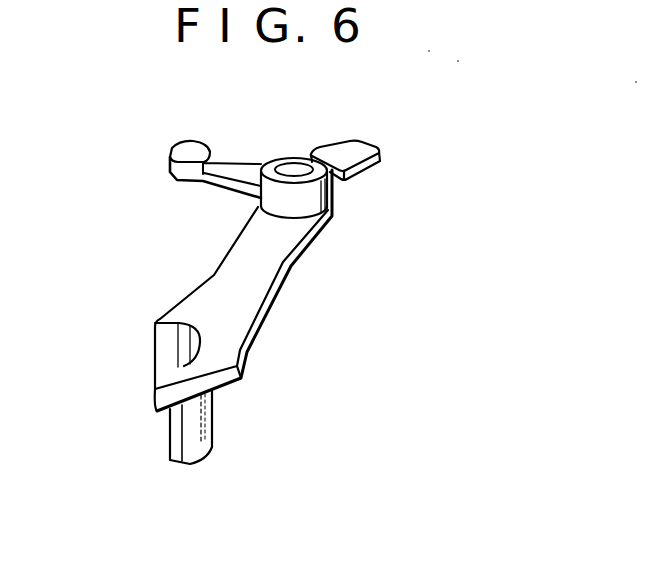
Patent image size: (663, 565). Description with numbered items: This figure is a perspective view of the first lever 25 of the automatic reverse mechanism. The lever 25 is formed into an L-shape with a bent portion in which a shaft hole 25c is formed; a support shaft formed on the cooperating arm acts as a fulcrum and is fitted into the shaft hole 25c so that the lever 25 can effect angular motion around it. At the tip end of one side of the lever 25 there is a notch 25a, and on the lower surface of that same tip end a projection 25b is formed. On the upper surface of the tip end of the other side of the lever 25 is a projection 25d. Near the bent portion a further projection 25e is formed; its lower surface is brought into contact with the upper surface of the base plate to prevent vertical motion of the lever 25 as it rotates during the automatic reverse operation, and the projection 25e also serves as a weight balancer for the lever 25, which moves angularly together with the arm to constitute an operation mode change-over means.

The first lever 25 is at (218, 274).
The notch 25a is at (197, 346).
The projection 25b is at (203, 427).
The shaft hole 25c is at (292, 167).
The projection 25d is at (187, 151).
The projection 25e is at (350, 153).